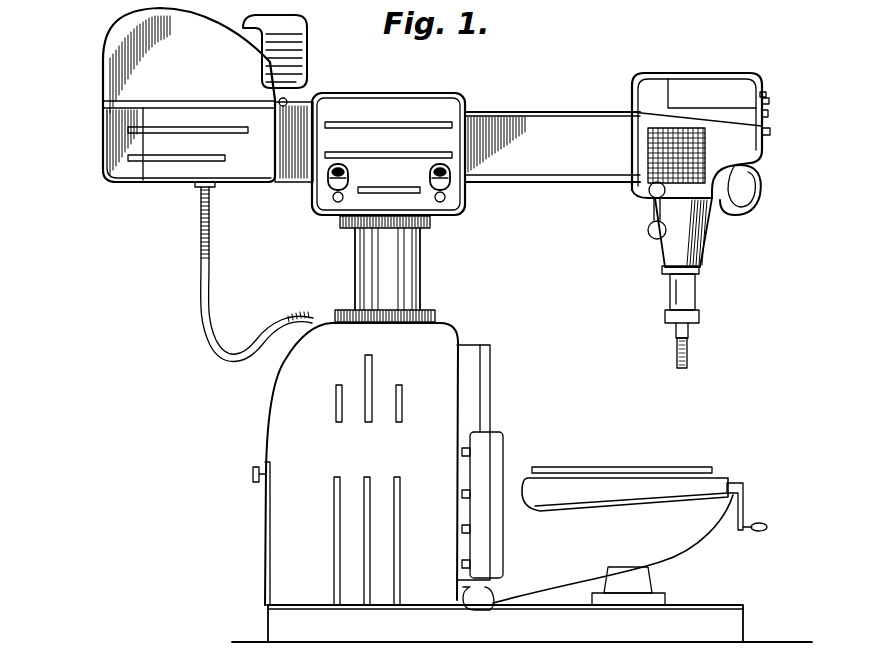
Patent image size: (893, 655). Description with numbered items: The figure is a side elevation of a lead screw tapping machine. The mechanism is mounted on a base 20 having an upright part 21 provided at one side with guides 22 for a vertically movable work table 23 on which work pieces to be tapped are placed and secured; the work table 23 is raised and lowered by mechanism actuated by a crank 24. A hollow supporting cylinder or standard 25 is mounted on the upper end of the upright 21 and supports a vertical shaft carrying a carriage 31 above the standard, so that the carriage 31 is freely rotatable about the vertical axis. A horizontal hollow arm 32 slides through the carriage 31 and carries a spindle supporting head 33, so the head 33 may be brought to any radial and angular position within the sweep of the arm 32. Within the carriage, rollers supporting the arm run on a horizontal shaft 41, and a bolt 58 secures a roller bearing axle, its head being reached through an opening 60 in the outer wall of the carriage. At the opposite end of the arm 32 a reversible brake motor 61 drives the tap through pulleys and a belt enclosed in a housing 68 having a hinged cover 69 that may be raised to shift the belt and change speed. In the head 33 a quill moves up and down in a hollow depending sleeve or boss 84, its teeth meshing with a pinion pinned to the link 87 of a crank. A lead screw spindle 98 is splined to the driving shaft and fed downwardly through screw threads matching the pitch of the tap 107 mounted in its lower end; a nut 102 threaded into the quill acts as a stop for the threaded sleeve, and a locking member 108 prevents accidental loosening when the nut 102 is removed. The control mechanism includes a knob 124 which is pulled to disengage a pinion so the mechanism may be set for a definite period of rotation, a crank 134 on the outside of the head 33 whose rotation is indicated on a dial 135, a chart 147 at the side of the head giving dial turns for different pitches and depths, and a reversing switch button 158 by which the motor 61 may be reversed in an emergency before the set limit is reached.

The base 20 is at (275, 618).
The upright part 21 is at (280, 426).
The guides 22 is at (484, 381).
The work table 23 is at (663, 543).
The crank 24 is at (745, 483).
The hollow supporting cylinder or standard 25 is at (358, 264).
The carriage 31 is at (388, 154).
The horizontal hollow arm 32 is at (543, 177).
The spindle supporting head 33 is at (650, 90).
The horizontal shaft 41 is at (335, 200).
The bolt 58 is at (330, 181).
The opening 60 is at (432, 182).
The reversible brake motor 61 is at (306, 52).
The housing 68 is at (140, 185).
The hinged cover 69 is at (104, 44).
The hollow depending sleeve or boss 84 is at (677, 250).
The link 87 is at (648, 231).
The lead screw spindle 98 is at (693, 293).
The nut 102 is at (673, 283).
The tap 107 is at (689, 351).
The locking member 108 is at (668, 273).
The knob 124 is at (768, 114).
The crank 134 is at (769, 100).
The dial 135 is at (765, 93).
The chart 147 is at (650, 176).
The reversing switch button 158 is at (770, 132).